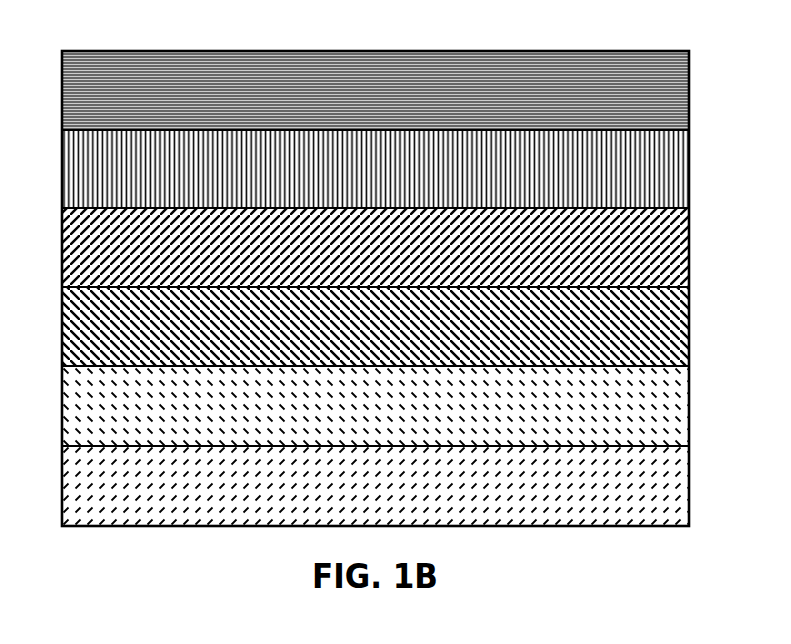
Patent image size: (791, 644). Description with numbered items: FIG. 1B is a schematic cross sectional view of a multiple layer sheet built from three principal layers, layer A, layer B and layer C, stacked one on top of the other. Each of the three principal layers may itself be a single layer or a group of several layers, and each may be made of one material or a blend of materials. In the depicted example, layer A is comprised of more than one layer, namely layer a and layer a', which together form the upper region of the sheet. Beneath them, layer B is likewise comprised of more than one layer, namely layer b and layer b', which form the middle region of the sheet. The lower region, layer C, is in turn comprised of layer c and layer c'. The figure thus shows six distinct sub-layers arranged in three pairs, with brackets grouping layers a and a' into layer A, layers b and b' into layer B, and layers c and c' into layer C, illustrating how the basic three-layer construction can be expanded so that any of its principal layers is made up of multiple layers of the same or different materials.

The layer a is at (364, 90).
The layer a' is at (364, 169).
The layer b is at (364, 247).
The layer b' is at (364, 326).
The layer c' is at (364, 406).
The layer c is at (364, 486).
The layer A is at (396, 129).
The layer B is at (396, 287).
The layer C is at (396, 446).